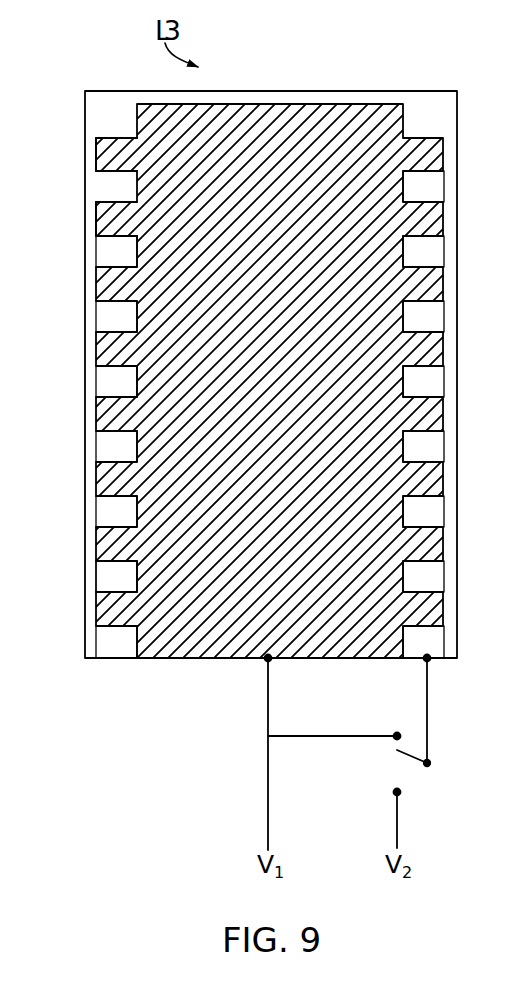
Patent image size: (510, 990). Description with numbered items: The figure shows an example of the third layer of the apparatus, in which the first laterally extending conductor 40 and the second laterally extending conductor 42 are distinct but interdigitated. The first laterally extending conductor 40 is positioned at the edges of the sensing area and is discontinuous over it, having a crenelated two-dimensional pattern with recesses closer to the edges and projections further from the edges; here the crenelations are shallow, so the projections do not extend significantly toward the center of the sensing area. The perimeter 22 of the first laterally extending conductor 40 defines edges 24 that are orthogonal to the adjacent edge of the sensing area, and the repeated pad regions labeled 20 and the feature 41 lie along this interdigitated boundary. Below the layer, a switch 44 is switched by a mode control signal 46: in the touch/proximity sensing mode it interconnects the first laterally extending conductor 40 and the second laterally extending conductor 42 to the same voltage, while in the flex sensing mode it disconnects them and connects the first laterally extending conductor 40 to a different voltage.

The electrode pads 20 is at (128, 263).
The perimeter 22 is at (140, 186).
The edges 24 is at (130, 160).
The first laterally extending conductor 40 is at (110, 658).
The connection 41 is at (139, 573).
The second laterally extending conductor 42 is at (228, 657).
The switch 44 is at (446, 732).
The mode control signal 46 is at (487, 764).